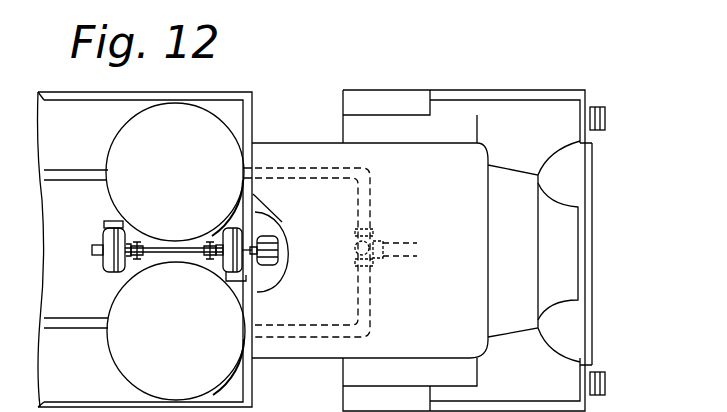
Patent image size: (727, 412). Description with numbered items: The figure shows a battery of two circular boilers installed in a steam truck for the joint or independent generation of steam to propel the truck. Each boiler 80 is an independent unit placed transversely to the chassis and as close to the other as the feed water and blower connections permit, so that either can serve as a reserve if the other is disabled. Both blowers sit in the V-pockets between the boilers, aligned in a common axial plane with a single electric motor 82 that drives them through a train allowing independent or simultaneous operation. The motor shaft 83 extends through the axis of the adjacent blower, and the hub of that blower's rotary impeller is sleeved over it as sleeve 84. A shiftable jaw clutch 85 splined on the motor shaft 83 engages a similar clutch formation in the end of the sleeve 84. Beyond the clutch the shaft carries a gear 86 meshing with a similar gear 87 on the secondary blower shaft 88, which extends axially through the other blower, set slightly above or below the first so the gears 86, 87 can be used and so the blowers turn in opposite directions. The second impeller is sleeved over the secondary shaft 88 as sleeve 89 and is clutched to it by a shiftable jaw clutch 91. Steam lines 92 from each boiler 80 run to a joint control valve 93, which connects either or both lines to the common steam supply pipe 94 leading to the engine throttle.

The boiler 80 is at (128, 133).
The motor 82 is at (270, 250).
The motor shaft 83 is at (262, 292).
The sleeve 84 is at (238, 236).
The shiftable jaw clutch 85 is at (208, 244).
The gear 86 is at (204, 268).
The gear 87 is at (110, 253).
The secondary blower shaft 88 is at (163, 247).
The sleeve 89 is at (143, 256).
The shiftable jaw clutch 91 is at (158, 253).
The steam lines 92 is at (290, 172).
The joint control valve 93 is at (376, 236).
The common steam supply pipe 94 is at (406, 258).